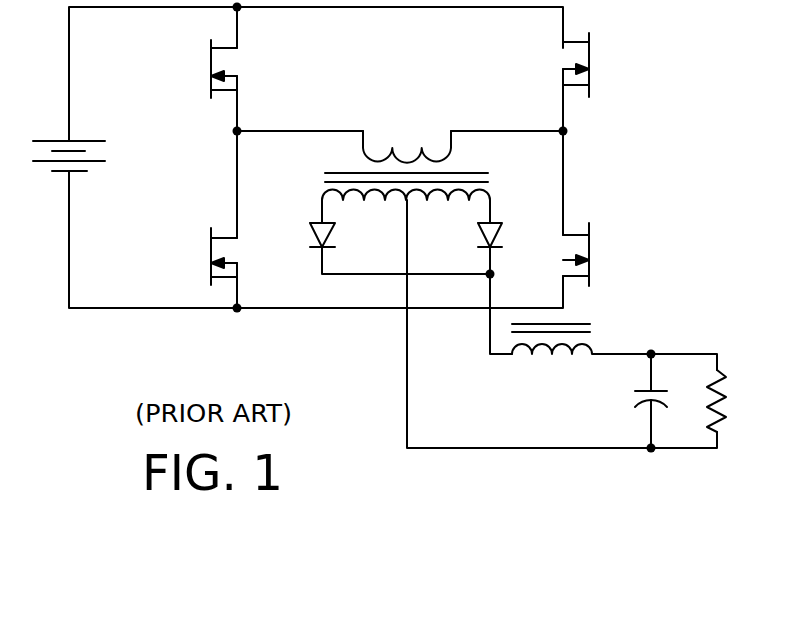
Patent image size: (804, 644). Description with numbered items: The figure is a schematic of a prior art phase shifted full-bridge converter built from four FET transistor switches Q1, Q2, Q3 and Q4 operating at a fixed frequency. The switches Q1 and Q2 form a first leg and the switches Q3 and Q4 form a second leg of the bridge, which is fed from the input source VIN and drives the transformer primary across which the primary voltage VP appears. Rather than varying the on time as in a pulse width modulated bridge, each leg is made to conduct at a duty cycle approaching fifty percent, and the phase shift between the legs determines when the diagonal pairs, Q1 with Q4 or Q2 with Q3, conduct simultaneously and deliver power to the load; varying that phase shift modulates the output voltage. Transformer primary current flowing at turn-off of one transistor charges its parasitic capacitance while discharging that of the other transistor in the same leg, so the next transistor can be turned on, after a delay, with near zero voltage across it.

The FET transistor switch Q1 is at (201, 69).
The FET transistor switch Q2 is at (201, 256).
The FET transistor switch Q3 is at (550, 65).
The FET transistor switch Q4 is at (551, 254).
The input voltage source VIN is at (78, 142).
The primary voltage / transformer primary VP is at (470, 108).